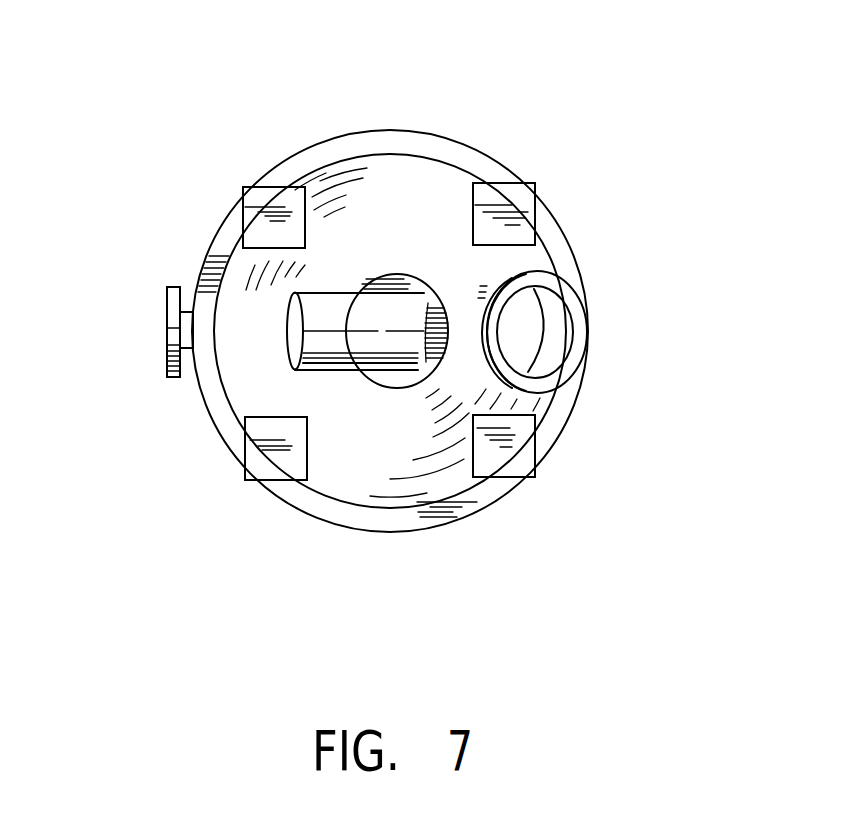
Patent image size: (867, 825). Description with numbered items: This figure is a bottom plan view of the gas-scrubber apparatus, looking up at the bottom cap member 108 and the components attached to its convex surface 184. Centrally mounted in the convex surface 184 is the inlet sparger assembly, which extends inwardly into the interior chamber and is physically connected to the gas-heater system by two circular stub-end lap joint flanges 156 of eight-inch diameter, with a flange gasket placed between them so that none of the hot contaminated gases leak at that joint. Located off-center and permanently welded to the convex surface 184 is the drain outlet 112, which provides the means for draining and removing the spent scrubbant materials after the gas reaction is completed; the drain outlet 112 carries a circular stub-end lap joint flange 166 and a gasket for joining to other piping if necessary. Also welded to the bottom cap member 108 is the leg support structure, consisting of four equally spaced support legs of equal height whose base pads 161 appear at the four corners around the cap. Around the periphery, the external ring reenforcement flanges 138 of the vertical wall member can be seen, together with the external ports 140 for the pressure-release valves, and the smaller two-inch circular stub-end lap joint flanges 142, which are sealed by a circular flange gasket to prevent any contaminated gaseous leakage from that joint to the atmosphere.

The bottom cap member 108 is at (418, 173).
The drain outlet 112 is at (528, 342).
The external ring reenforcement flanges 138 is at (387, 520).
The external ports 140 is at (167, 360).
The circular stub-end lap joint flanges 142 is at (175, 303).
The circular stub-end lap joint flanges 156 is at (407, 377).
The base pads 161 is at (267, 200).
The circular stub-end lap joint flange 166 is at (577, 293).
The convex surface 184 is at (294, 271).